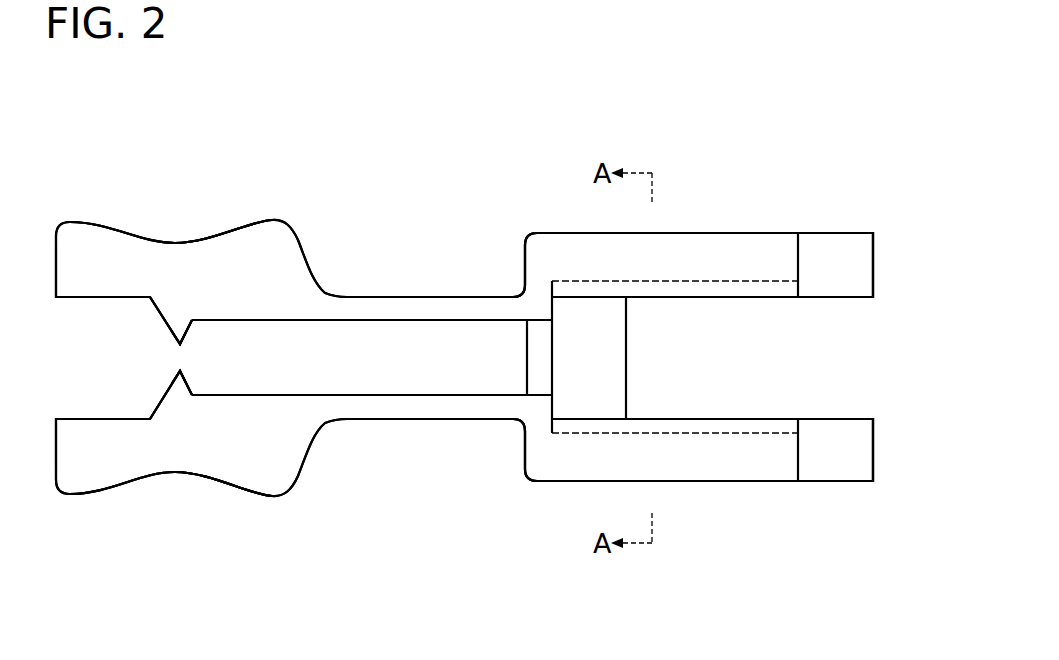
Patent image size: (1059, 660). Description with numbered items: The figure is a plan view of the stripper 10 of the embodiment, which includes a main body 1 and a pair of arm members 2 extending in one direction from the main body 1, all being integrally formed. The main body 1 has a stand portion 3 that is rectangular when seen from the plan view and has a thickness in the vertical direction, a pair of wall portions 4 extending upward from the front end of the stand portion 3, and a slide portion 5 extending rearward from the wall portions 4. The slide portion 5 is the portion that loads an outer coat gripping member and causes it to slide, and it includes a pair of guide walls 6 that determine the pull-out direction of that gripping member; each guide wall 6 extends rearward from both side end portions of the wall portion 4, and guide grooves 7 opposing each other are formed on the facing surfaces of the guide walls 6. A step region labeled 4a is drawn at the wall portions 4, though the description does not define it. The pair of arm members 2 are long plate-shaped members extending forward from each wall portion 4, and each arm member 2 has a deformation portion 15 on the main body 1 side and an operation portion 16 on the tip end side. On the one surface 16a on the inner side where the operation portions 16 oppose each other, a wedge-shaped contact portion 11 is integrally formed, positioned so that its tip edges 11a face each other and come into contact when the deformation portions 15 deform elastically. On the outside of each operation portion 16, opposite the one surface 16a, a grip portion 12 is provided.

The main body 1 is at (698, 482).
The arm member 2 is at (314, 247).
The stand portion 3 is at (603, 363).
The wall portion 4 is at (525, 290).
The step portion 4a is at (553, 313).
The slide portion 5 is at (712, 356).
The guide wall 6 is at (717, 247).
The guide groove 7 is at (733, 282).
The stripper 10 is at (490, 172).
The contact portion 11 is at (167, 320).
The tip edge 11a is at (178, 357).
The grip portion 12 is at (174, 247).
The deformation portion 15 is at (395, 313).
The operation portion 16 is at (222, 280).
The one surface 16a is at (280, 322).